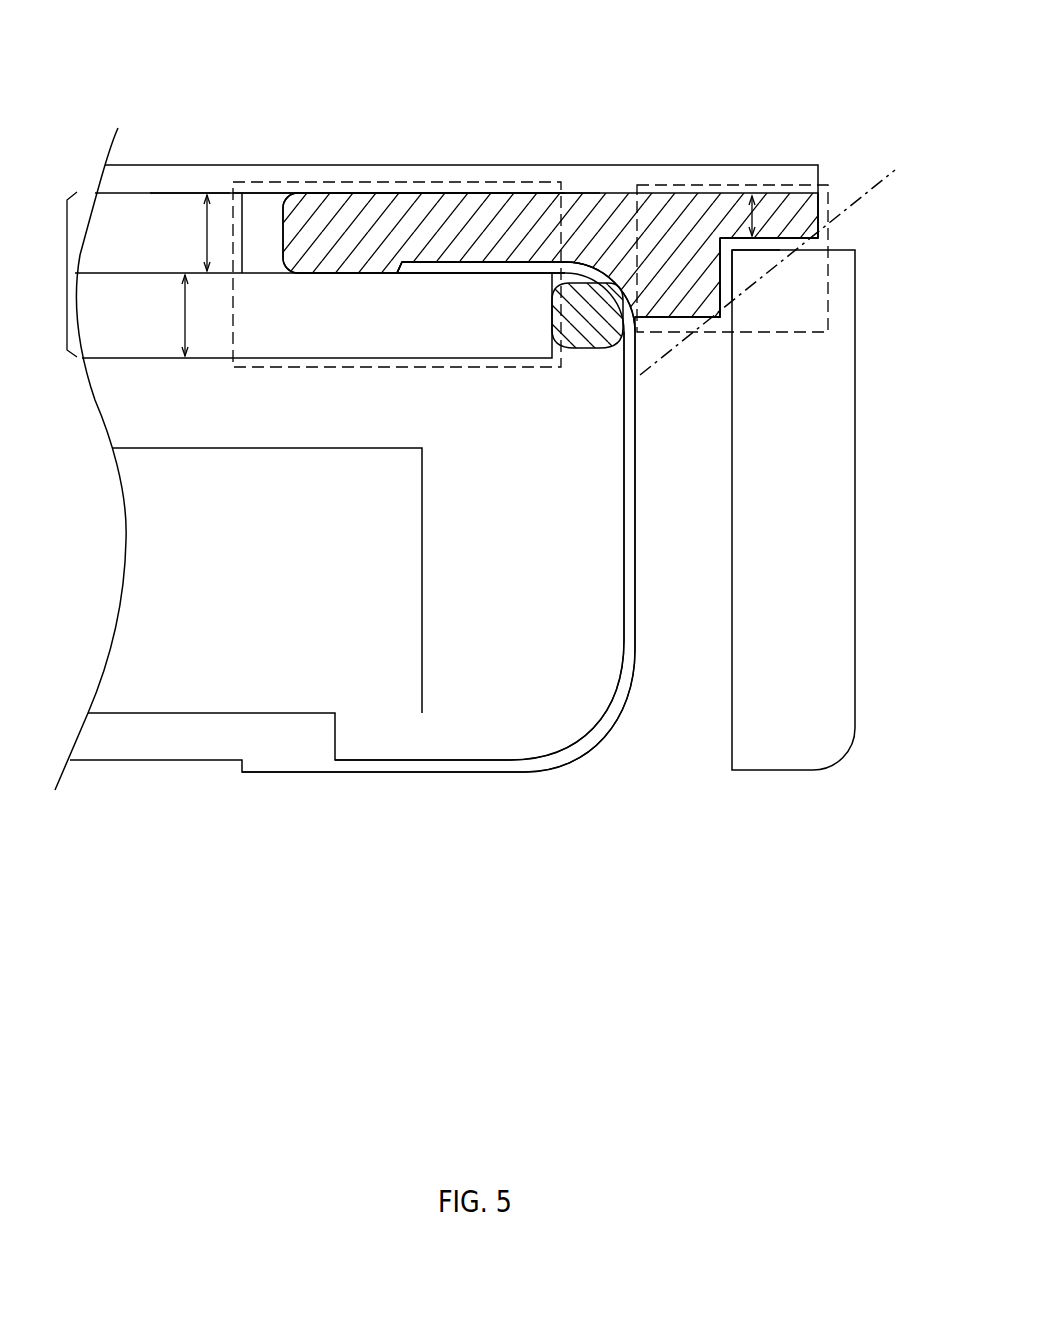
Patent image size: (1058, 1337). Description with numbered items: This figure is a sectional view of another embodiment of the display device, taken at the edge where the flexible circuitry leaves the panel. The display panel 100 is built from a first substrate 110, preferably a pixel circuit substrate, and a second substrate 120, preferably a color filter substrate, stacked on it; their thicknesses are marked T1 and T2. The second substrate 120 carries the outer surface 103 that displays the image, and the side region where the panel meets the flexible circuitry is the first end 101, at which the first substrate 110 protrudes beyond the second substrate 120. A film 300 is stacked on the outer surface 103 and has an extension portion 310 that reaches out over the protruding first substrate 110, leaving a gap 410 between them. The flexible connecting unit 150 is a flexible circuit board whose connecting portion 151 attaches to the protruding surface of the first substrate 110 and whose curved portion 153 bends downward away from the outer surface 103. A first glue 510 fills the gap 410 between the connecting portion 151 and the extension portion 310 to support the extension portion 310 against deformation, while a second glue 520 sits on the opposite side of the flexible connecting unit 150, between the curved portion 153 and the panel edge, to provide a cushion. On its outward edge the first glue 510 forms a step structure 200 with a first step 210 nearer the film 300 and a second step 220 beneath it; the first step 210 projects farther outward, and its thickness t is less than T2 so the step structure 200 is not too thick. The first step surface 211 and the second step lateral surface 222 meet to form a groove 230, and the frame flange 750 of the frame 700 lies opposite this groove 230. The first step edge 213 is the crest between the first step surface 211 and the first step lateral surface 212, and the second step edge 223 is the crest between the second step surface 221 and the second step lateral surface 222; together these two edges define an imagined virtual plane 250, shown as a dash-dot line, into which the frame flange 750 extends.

The display panel 100 is at (48, 274).
The first end 101 is at (307, 181).
The outer surface 103 is at (186, 188).
The first substrate 110 is at (135, 354).
The second substrate 120 is at (130, 269).
The flexible connecting unit 150 is at (263, 67).
The connecting portion 151 is at (400, 262).
The curved portion 153 is at (628, 565).
The step structure 200 is at (830, 262).
The first step 210 is at (780, 213).
The first step surface 211 is at (770, 242).
The first step lateral surface 212 is at (820, 228).
The first step edge 213 is at (823, 237).
The second step 220 is at (678, 280).
The second step surface 221 is at (678, 317).
The second step lateral surface 222 is at (731, 262).
The second step edge 223 is at (719, 300).
The groove 230 is at (733, 255).
The virtual plane 250 is at (784, 259).
The film 300 is at (148, 177).
The extension portion 310 is at (448, 181).
The gap 410 is at (260, 210).
The first glue 510 is at (505, 228).
The second glue 520 is at (585, 307).
The frame 700 is at (812, 752).
The frame flange 750 is at (730, 246).
The thickness of first substrate T1 is at (199, 315).
The thickness of second substrate T2 is at (220, 233).
The thickness of first step t is at (745, 216).